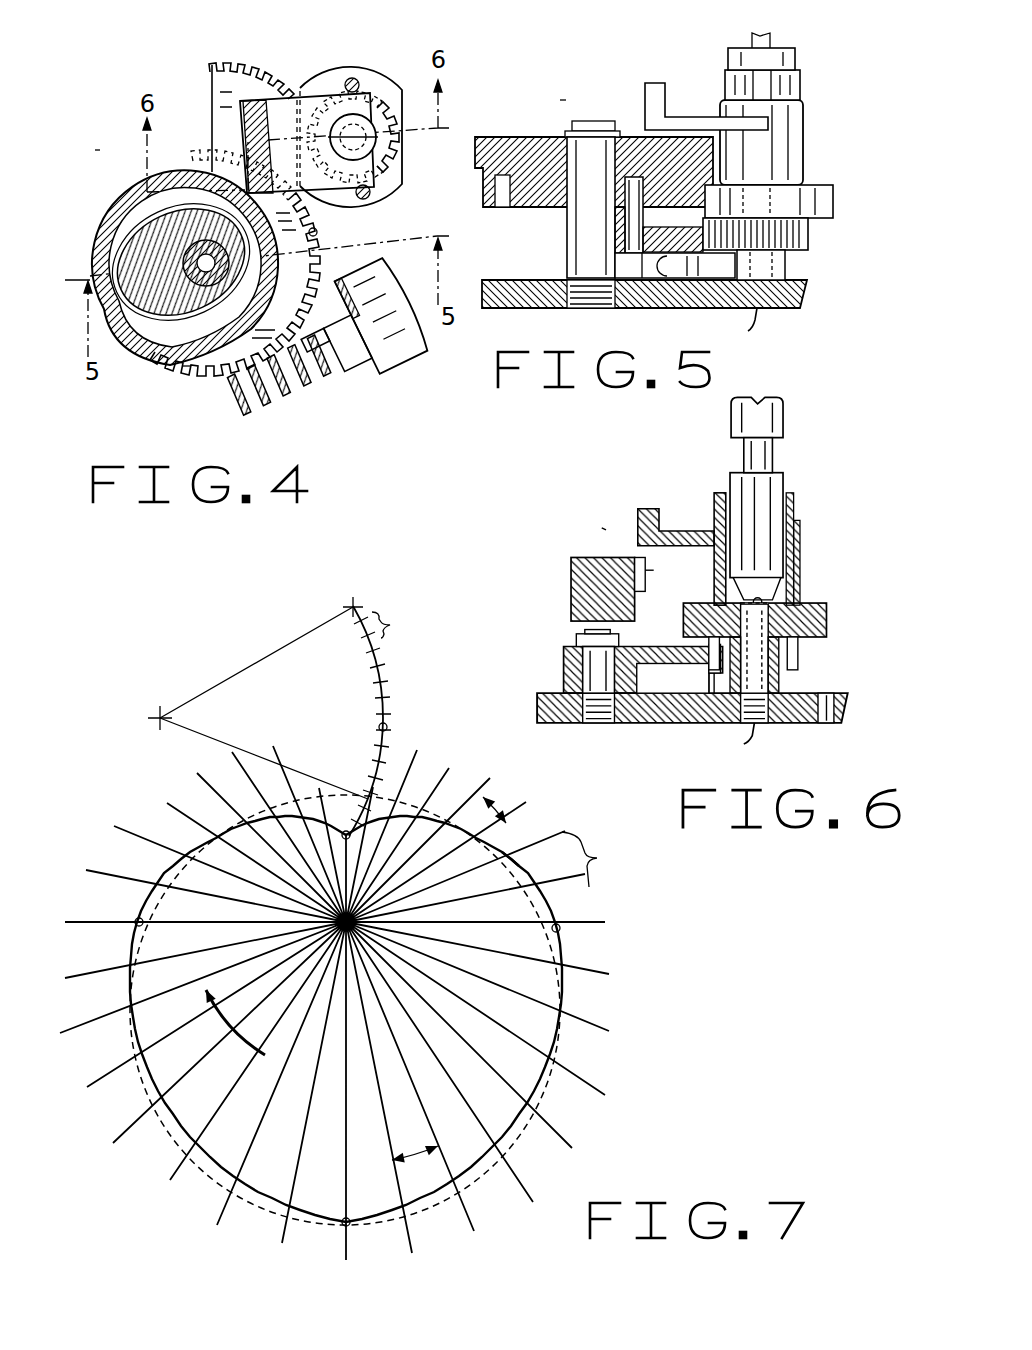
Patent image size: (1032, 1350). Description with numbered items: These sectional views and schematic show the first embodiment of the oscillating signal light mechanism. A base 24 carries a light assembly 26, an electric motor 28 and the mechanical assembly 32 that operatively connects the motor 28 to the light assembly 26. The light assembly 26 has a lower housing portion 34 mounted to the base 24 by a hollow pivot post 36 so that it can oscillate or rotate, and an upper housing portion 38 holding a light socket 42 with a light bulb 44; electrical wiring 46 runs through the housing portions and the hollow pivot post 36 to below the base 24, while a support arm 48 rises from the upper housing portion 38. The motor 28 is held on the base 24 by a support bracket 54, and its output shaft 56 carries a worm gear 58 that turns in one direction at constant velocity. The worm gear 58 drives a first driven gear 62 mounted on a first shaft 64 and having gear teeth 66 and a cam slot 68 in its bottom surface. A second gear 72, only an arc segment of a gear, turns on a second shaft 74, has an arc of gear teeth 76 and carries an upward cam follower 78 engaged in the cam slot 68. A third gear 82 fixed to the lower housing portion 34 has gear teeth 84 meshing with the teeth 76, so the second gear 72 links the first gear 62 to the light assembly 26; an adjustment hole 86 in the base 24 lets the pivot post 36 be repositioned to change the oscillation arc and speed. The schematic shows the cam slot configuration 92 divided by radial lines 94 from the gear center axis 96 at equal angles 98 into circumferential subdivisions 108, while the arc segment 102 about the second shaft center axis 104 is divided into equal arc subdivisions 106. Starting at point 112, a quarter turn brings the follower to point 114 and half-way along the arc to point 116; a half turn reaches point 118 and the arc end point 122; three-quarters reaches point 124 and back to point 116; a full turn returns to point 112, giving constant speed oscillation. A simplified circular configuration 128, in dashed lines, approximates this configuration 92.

In FIG. 5, the base 24 is at (805, 278).
In FIG. 6, the base 24 is at (836, 676).
In FIG. 4, the light assembly 26 is at (354, 60).
In FIG. 5, the light assembly 26 is at (816, 128).
In FIG. 6, the light assembly 26 is at (790, 523).
In FIG. 4, the electric motor 28 is at (404, 362).
In FIG. 4, the mechanical assembly 32 is at (114, 162).
In FIG. 5, the mechanical assembly 32 is at (563, 96).
In FIG. 6, the mechanical assembly 32 is at (593, 520).
In FIG. 5, the lower housing portion 34 is at (826, 200).
In FIG. 6, the lower housing portion 34 is at (810, 620).
In FIG. 6, the pivot post 36 is at (752, 610).
In FIG. 5, the upper housing portion 38 is at (784, 165).
In FIG. 6, the upper housing portion 38 is at (776, 578).
In FIG. 5, the light socket 42 is at (792, 88).
In FIG. 6, the light socket 42 is at (772, 505).
In FIG. 5, the light bulb 44 is at (776, 60).
In FIG. 6, the light bulb 44 is at (758, 422).
In FIG. 5, the electrical wiring 46 is at (760, 326).
In FIG. 6, the electrical wiring 46 is at (752, 722).
In FIG. 5, the support arm 48 is at (669, 117).
In FIG. 6, the support arm 48 is at (689, 522).
In FIG. 4, the support bracket 54 is at (348, 332).
In FIG. 4, the output shaft 56 is at (340, 346).
In FIG. 4, the worm gear 58 is at (303, 400).
In FIG. 4, the first driven gear 62 is at (170, 370).
In FIG. 5, the first driven gear 62 is at (526, 136).
In FIG. 6, the first driven gear 62 is at (590, 556).
In FIG. 5, the first shaft 64 is at (596, 120).
In FIG. 4, the gear teeth 66 is at (201, 392).
In FIG. 5, the gear teeth 66 is at (474, 138).
In FIG. 6, the gear teeth 66 is at (642, 571).
In FIG. 4, the cam slot 68 is at (96, 262).
In FIG. 5, the cam slot 68 is at (503, 205).
In FIG. 4, the second gear 72 is at (243, 185).
In FIG. 5, the second gear 72 is at (668, 256).
In FIG. 6, the second gear 72 is at (653, 630).
In FIG. 6, the second shaft 74 is at (573, 622).
In FIG. 4, the gear teeth 76 is at (243, 60).
In FIG. 5, the gear teeth 76 is at (712, 268).
In FIG. 6, the gear teeth 76 is at (703, 660).
In FIG. 4, the cam follower 78 is at (318, 231).
In FIG. 5, the cam follower 78 is at (637, 236).
In FIG. 4, the third gear 82 is at (378, 170).
In FIG. 5, the third gear 82 is at (800, 257).
In FIG. 6, the third gear 82 is at (775, 664).
In FIG. 4, the gear teeth 84 is at (401, 150).
In FIG. 5, the gear teeth 84 is at (820, 238).
In FIG. 6, the gear teeth 84 is at (792, 637).
In FIG. 6, the adjustment hole 86 is at (816, 676).
In FIG. 7, the cam slot configuration 92 is at (516, 848).
In FIG. 7, the radial lines 94 is at (566, 952).
In FIG. 4, the center axis 96 is at (126, 190).
In FIG. 7, the center axis 96 is at (358, 929).
In FIG. 7, the equal angles 98 is at (516, 806).
In FIG. 7, the arc segment 102 is at (393, 684).
In FIG. 4, the center axis 104 is at (205, 176).
In FIG. 7, the center axis 104 is at (152, 712).
In FIG. 7, the arc subdivisions 106 is at (390, 625).
In FIG. 7, the circumferential subdivisions 108 is at (597, 858).
In FIG. 7, the point 112 is at (347, 831).
In FIG. 7, the point 114 is at (139, 918).
In FIG. 7, the point 116 is at (386, 724).
In FIG. 7, the point 118 is at (350, 1224).
In FIG. 7, the point 122 is at (353, 604).
In FIG. 7, the point 124 is at (560, 927).
In FIG. 7, the circular configuration 128 is at (540, 1132).